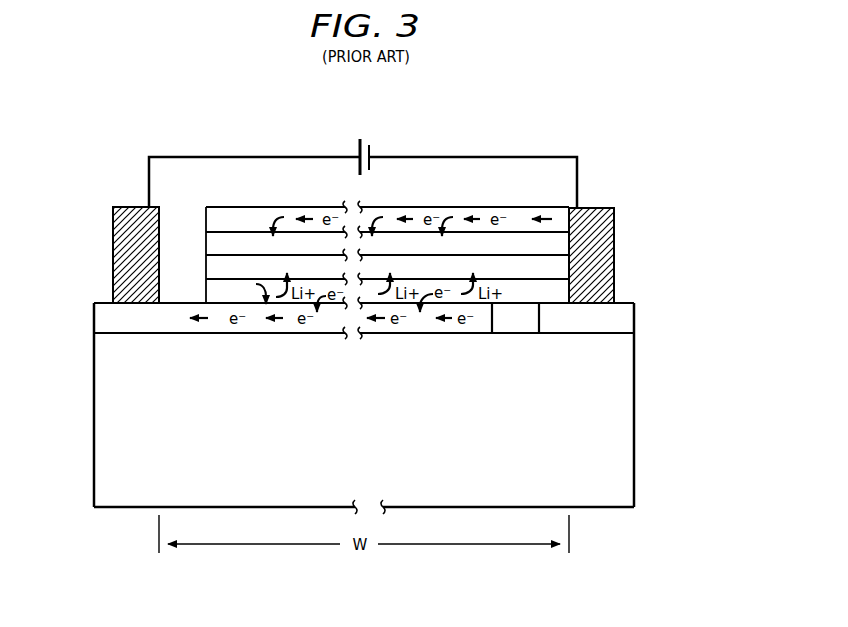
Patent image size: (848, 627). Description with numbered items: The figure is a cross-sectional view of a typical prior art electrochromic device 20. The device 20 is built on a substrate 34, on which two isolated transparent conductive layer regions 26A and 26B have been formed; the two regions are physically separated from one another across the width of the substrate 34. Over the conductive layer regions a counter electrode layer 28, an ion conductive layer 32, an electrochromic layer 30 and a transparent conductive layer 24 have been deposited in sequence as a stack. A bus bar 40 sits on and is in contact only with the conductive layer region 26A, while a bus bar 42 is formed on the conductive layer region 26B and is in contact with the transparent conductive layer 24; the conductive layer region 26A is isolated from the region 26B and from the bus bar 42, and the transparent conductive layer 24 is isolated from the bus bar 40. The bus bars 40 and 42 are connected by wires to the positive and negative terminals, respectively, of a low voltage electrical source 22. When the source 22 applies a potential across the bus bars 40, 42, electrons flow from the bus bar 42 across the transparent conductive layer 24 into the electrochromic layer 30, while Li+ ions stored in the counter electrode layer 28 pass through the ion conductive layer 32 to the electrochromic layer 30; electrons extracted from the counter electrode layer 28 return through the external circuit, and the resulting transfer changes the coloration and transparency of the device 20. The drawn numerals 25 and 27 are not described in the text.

The electrochromic device 20 is at (674, 164).
The low voltage electrical source 22 is at (264, 141).
The transparent conductive layer 24 is at (525, 208).
The substrate left side surface 25 is at (93, 423).
The transparent conductive layer region 26A is at (103, 321).
The transparent conductive layer region 26B is at (625, 319).
The substrate right side surface 27 is at (634, 416).
The counter electrode layer 28 is at (216, 291).
The electrochromic layer 30 is at (216, 245).
The ion conductive layer 32 is at (216, 268).
The substrate 34 is at (363, 437).
The bus bar 40 is at (119, 276).
The bus bar 42 is at (606, 256).